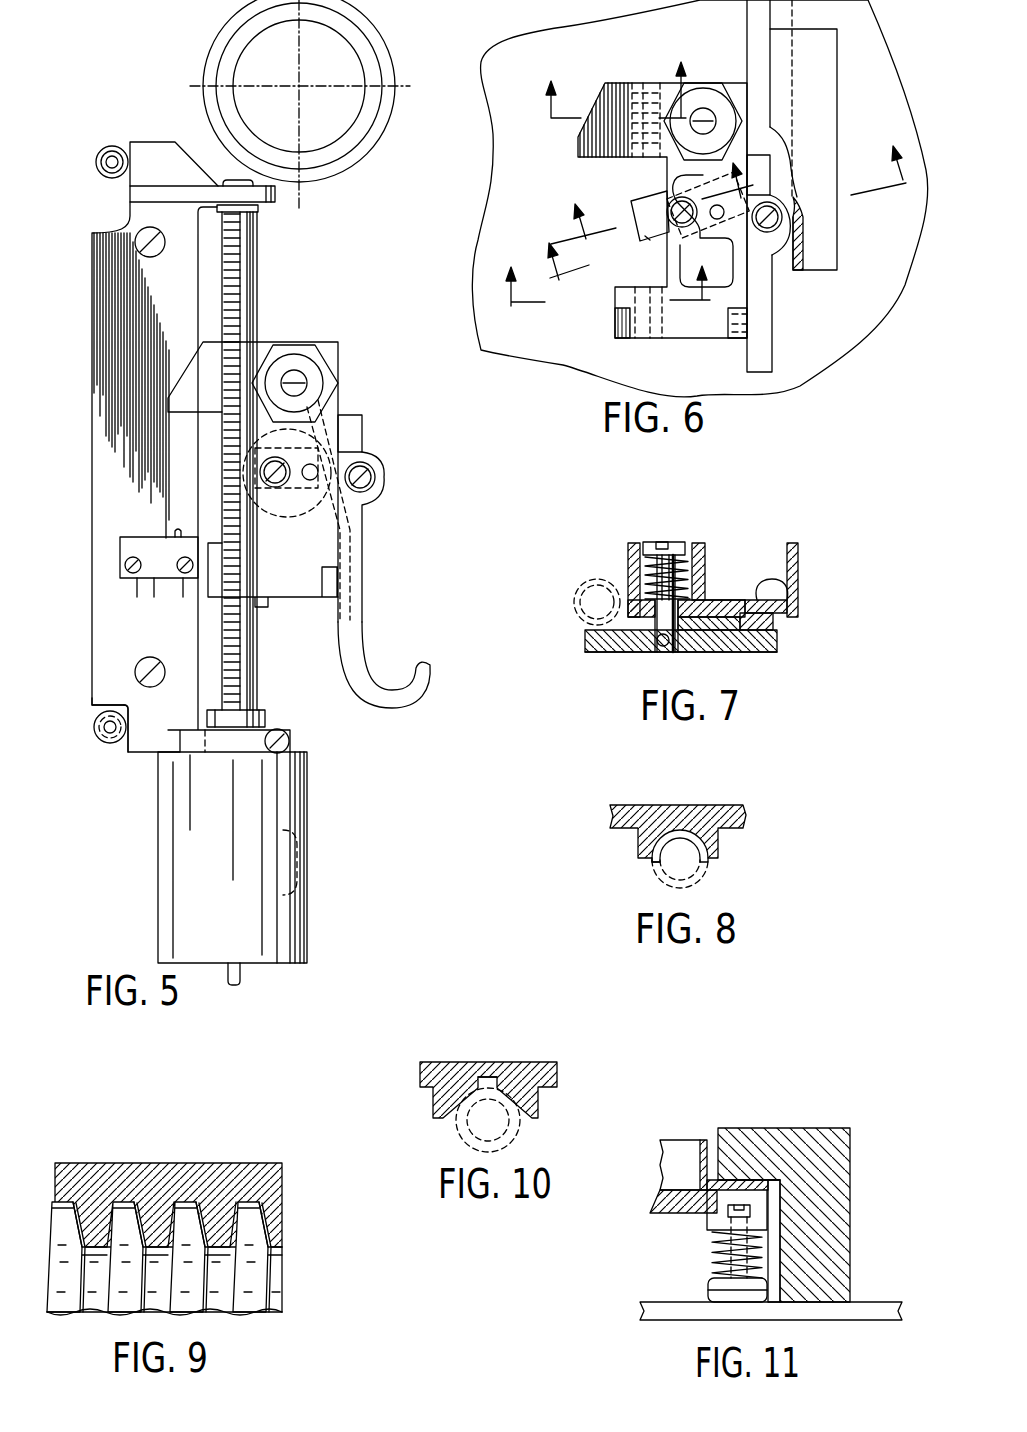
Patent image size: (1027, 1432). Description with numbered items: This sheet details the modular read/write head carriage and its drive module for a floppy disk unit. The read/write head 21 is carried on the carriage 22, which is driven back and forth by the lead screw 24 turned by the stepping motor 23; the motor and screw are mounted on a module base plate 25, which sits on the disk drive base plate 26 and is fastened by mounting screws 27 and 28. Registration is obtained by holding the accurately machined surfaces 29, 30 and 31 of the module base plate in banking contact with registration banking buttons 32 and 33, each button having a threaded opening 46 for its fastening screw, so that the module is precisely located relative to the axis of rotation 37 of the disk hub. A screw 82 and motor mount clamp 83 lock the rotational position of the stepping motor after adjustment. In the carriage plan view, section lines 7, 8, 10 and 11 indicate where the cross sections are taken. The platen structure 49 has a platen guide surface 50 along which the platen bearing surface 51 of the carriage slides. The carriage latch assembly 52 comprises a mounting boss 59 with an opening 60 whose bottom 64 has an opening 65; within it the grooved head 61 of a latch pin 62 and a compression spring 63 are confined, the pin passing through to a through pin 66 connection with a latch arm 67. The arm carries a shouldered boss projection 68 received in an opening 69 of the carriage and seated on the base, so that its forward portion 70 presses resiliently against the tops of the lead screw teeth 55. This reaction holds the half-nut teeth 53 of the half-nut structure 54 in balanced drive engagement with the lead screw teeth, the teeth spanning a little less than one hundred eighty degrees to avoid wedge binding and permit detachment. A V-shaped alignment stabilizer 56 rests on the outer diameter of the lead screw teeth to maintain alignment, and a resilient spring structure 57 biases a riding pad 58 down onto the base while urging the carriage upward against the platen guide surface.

In FIG. 6, the section line 7— 7 is at (652, 212).
In FIG. 6, the section line 8— 8 is at (613, 106).
In FIG. 6, the section line 10— 10 is at (612, 295).
In FIG. 6, the section line 11— 11 is at (731, 224).
In FIG. 5, the read/write head 21 is at (318, 368).
In FIG. 6, the read/write head 21 is at (710, 95).
In FIG. 5, the carriage 22 is at (326, 344).
In FIG. 6, the carriage 22 is at (695, 345).
In FIG. 7, the carriage 22 is at (798, 560).
In FIG. 10, the carriage 22 is at (535, 1068).
In FIG. 11, the carriage 22 is at (668, 1213).
In FIG. 5, the stepping motor 23 is at (162, 886).
In FIG. 5, the lead screw 24 is at (252, 258).
In FIG. 7, the lead screw 24 is at (575, 605).
In FIG. 8, the lead screw 24 is at (700, 888).
In FIG. 9, the lead screw 24 is at (278, 1290).
In FIG. 10, the lead screw 24 is at (515, 1125).
In FIG. 5, the module base plate 25 is at (90, 285).
In FIG. 6, the disk drive base plate 26 is at (829, 331).
In FIG. 11, the disk drive base plate 26 is at (823, 1310).
In FIG. 5, the mounting screw 27 is at (101, 158).
In FIG. 5, the mounting screw 28 is at (150, 657).
In FIG. 5, the machined surface 29 is at (128, 188).
In FIG. 5, the machined surface 30 is at (89, 707).
In FIG. 5, the machined surface 31 is at (127, 752).
In FIG. 5, the registration banking button 32 is at (112, 147).
In FIG. 5, the registration banking button 33 is at (99, 738).
In FIG. 5, the axis of rotation 37 is at (300, 84).
In FIG. 5, the threaded opening 46 is at (98, 164).
In FIG. 6, the platen structure 49 is at (833, 87).
In FIG. 11, the platen structure 49 is at (852, 1245).
In FIG. 11, the platen guide surface 50 is at (760, 1180).
In FIG. 6, the platen bearing surface 51 is at (762, 163).
In FIG. 11, the platen bearing surface 51 is at (715, 1177).
In FIG. 6, the carriage latch assembly 52 is at (646, 191).
In FIG. 7, the carriage latch assembly 52 is at (710, 599).
In FIG. 6, the half-nut teeth 53 is at (655, 90).
In FIG. 8, the half-nut teeth 53 is at (652, 866).
In FIG. 9, the half-nut teeth 53 is at (275, 1228).
In FIG. 6, the half-nut structure 54 is at (617, 83).
In FIG. 8, the half-nut structure 54 is at (733, 805).
In FIG. 9, the half-nut structure 54 is at (265, 1170).
In FIG. 5, the lead screw teeth 55 is at (252, 232).
In FIG. 8, the lead screw teeth 55 is at (708, 870).
In FIG. 9, the lead screw teeth 55 is at (55, 1230).
In FIG. 10, the lead screw teeth 55 is at (460, 1125).
In FIG. 6, the alignment stabilizer 56 is at (615, 341).
In FIG. 10, the alignment stabilizer 56 is at (469, 1060).
In FIG. 11, the resilient spring structure 57 is at (704, 1243).
In FIG. 11, the riding pad 58 is at (710, 1290).
In FIG. 6, the mounting boss 59 is at (693, 232).
In FIG. 7, the mounting boss 59 is at (628, 543).
In FIG. 7, the opening 60 is at (656, 545).
In FIG. 7, the grooved head 61 is at (666, 548).
In FIG. 7, the latch pin 62 is at (658, 620).
In FIG. 7, the compression spring 63 is at (692, 575).
In FIG. 7, the bottom 64 is at (643, 590).
In FIG. 7, the opening 65 is at (692, 615).
In FIG. 7, the through pin 66 is at (663, 647).
In FIG. 7, the latch arm 67 is at (770, 652).
In FIG. 7, the shouldered boss projection 68 is at (775, 625).
In FIG. 7, the opening 69 is at (787, 588).
In FIG. 6, the forward portion 70 is at (648, 240).
In FIG. 7, the forward portion 70 is at (589, 652).
In FIG. 5, the screw 82 is at (288, 741).
In FIG. 5, the motor mount clamp 83 is at (252, 749).